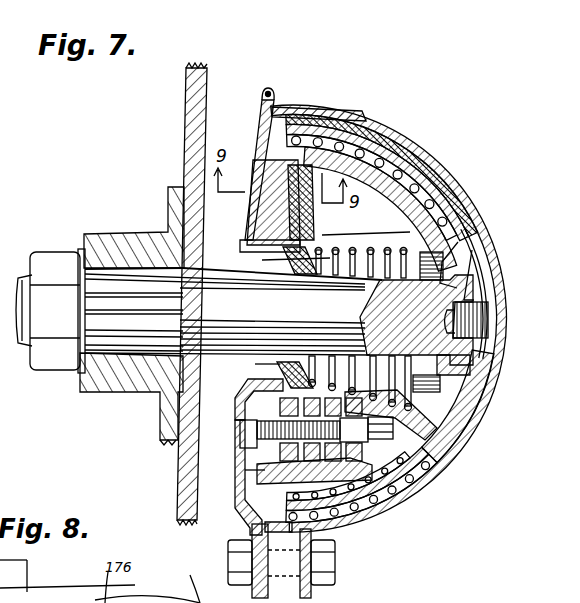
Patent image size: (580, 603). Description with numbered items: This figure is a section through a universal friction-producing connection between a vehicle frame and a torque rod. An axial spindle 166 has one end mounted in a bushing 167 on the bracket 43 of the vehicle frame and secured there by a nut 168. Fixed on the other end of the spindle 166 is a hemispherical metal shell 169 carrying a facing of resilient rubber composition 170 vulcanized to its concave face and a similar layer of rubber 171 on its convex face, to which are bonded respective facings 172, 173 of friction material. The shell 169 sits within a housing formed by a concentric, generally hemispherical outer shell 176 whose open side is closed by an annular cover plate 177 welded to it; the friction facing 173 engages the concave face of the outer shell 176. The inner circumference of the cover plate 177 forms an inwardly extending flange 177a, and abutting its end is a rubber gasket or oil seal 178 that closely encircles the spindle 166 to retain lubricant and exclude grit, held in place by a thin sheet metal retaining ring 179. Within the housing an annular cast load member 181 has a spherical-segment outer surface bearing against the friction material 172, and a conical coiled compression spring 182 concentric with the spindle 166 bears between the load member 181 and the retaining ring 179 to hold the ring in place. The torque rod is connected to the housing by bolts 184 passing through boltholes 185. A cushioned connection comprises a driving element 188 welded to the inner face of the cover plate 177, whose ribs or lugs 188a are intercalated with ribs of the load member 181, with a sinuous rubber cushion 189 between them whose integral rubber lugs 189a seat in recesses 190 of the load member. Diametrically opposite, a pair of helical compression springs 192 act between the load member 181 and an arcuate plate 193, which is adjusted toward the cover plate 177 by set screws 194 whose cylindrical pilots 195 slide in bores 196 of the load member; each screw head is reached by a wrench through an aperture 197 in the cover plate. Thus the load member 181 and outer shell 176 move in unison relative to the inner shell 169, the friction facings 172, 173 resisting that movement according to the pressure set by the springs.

The bracket 43 is at (178, 478).
The axial spindle 166 is at (234, 357).
The bushing 167 is at (132, 234).
The nut 168 is at (64, 370).
The hemispherical metal shell 169 is at (463, 258).
The resilient rubber composition facing 170 is at (458, 239).
The layer of rubber 171 is at (480, 214).
The facing of friction material 172 is at (290, 488).
The facing of friction material 173 is at (292, 509).
The outer shell 176 is at (490, 389).
The annular cover plate 177 is at (236, 498).
The inwardly extending flange 177a is at (248, 249).
The rubber gasket or oil seal 178 is at (262, 260).
The sheet metal retaining ring 179 is at (252, 396).
The load member 181 is at (395, 204).
The conical coiled compression spring 182 is at (343, 248).
The bolts 184 is at (322, 562).
The boltholes 185 is at (194, 590).
The driving element 188 is at (259, 126).
The ribs or lugs 188a is at (278, 165).
The cushion of resilient rubber composition 189 is at (293, 165).
The integral rubber lugs 189a is at (334, 150).
The bores or recesses 190 is at (366, 165).
The helical compression springs 192 is at (402, 498).
The arcuate plate 193 is at (240, 478).
The set screws 194 is at (240, 468).
The cylindrical pilot 195 is at (430, 478).
The bore 196 is at (446, 457).
The aperture 197 is at (240, 440).